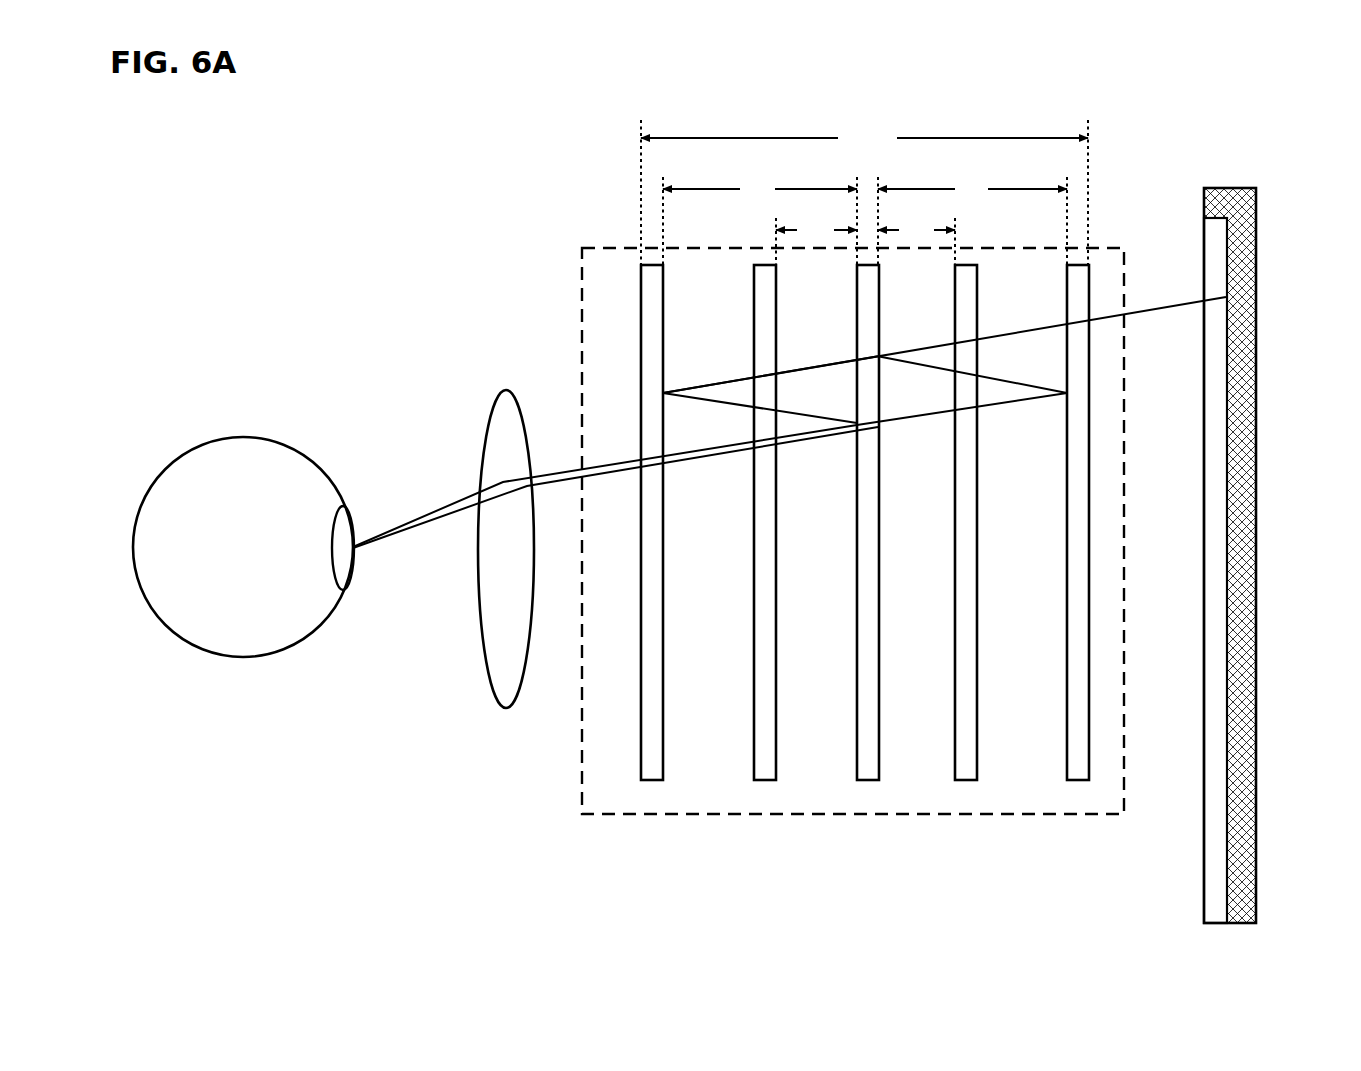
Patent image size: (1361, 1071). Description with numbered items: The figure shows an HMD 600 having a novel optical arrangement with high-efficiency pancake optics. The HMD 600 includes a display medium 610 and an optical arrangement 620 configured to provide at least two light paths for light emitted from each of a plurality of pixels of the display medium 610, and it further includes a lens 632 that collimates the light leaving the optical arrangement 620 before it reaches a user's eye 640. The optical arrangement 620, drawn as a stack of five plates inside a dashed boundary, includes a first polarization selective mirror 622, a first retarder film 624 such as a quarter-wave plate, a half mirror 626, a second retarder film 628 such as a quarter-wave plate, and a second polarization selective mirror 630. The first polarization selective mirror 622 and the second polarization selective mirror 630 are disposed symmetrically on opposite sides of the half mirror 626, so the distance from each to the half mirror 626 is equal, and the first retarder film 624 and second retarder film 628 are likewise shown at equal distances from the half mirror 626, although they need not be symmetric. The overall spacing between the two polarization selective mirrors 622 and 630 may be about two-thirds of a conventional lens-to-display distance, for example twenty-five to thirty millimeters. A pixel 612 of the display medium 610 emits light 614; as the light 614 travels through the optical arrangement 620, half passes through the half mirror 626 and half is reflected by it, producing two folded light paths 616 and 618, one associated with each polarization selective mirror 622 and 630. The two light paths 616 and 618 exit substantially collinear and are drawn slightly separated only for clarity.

The HMD 600 is at (1284, 156).
The display medium 610 is at (1264, 555).
The pixel 612 is at (1227, 298).
The light 614 is at (1172, 306).
The light path 616 is at (815, 367).
The light path 618 is at (917, 369).
The optical arrangement 620 is at (582, 287).
The first polarization selective mirror 622 is at (1078, 780).
The first retarder film 624 is at (966, 780).
The half mirror 626 is at (868, 780).
The second retarder film 628 is at (765, 780).
The second polarization selective mirror 630 is at (652, 780).
The lens 632 is at (505, 710).
The user's eye 640 is at (236, 657).